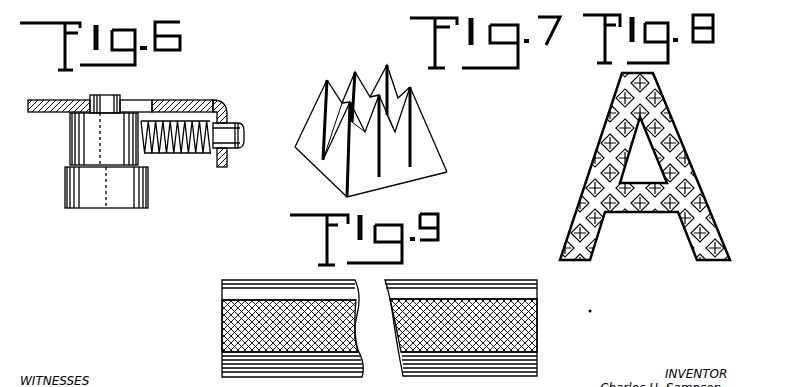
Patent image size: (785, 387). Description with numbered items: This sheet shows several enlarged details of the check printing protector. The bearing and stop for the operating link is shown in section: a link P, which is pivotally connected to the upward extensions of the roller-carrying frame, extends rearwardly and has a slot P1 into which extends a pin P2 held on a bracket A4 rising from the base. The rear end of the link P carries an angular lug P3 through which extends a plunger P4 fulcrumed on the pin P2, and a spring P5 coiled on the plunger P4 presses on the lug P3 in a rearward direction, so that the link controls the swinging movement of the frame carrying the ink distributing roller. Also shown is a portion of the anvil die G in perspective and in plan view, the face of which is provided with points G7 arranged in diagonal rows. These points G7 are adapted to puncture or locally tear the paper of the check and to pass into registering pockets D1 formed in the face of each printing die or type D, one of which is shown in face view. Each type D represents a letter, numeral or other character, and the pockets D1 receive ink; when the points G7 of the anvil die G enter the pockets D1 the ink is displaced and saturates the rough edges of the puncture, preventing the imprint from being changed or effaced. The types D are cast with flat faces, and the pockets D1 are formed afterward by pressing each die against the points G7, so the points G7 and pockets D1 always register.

In FIG. 6, the link P is at (205, 100).
In FIG. 6, the slot P1 is at (152, 105).
In FIG. 6, the pin P2 is at (101, 95).
In FIG. 6, the angular lug P3 is at (227, 160).
In FIG. 6, the plunger P4 is at (241, 130).
In FIG. 6, the spring P5 is at (180, 156).
In FIG. 6, the bracket A4 is at (120, 195).
In FIG. 7, the anvil die G is at (381, 138).
In FIG. 9, the anvil die G is at (274, 328).
In FIG. 7, the points G7 is at (324, 84).
In FIG. 9, the points G7 is at (517, 325).
In FIG. 8, the printing die D is at (645, 166).
In FIG. 8, the pockets D1 is at (593, 183).